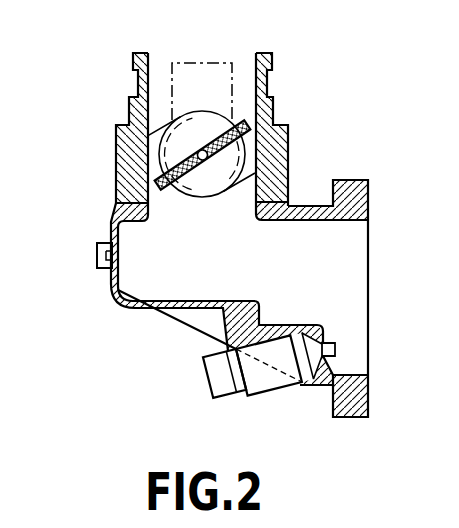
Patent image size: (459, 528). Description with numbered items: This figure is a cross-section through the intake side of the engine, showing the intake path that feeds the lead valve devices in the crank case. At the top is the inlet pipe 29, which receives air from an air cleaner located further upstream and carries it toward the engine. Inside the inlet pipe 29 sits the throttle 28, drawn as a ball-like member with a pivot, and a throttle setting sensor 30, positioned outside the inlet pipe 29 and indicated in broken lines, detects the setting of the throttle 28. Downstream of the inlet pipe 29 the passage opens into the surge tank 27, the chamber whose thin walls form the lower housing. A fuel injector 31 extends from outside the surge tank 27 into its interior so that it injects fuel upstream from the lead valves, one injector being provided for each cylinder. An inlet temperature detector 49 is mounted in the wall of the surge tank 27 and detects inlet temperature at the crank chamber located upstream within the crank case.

The surge tank 27 is at (112, 296).
The throttle 28 is at (240, 135).
The inlet pipe 29 is at (266, 85).
The throttle setting sensor 30 is at (215, 63).
The fuel injector 31 is at (263, 393).
The inlet temperature detector 49 is at (97, 253).